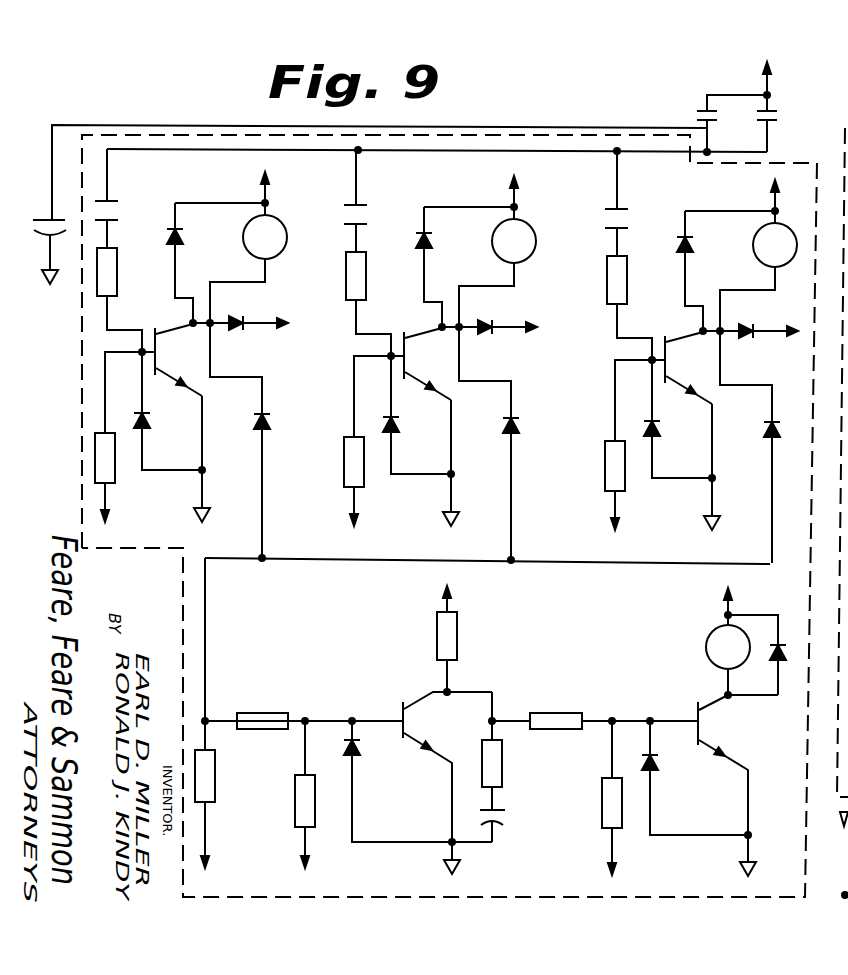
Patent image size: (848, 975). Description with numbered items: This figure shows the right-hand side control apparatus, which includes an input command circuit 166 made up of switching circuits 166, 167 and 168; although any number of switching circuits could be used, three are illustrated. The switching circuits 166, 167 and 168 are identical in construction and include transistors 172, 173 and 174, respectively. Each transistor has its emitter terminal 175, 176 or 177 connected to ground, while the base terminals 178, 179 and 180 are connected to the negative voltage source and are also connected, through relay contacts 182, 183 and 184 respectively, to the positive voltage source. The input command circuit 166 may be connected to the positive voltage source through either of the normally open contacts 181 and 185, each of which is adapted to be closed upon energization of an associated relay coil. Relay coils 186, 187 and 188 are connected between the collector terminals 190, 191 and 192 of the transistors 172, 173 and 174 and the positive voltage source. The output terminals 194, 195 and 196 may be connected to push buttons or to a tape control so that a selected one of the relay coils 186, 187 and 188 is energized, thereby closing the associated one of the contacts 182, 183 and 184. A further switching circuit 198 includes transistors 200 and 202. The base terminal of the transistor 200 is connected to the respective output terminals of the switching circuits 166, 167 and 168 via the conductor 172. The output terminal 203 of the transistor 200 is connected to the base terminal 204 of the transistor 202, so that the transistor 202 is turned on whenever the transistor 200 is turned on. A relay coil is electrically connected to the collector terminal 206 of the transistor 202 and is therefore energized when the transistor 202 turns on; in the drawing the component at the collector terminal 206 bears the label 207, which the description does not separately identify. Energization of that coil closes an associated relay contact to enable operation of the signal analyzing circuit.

The input command circuit 166 is at (176, 395).
The switching circuit 167 is at (423, 356).
The switching circuit 168 is at (679, 357).
The transistor 172 is at (172, 321).
The transistor 173 is at (411, 344).
The transistor 174 is at (671, 349).
The emitter terminal 175 is at (194, 393).
The emitter terminal 176 is at (417, 415).
The emitter terminal 177 is at (678, 419).
The base terminal 178 is at (142, 352).
The base terminal 179 is at (339, 370).
The base terminal 180 is at (604, 354).
The normally open contact 181 is at (697, 110).
The relay contact 182 is at (110, 200).
The relay contact 183 is at (379, 200).
The relay contact 184 is at (637, 203).
The normally open contact 185 is at (779, 110).
The relay coil 186 is at (244, 241).
The relay coil 187 is at (487, 240).
The relay coil 188 is at (752, 248).
The collector terminal 190 is at (196, 328).
The collector terminal 191 is at (481, 347).
The collector terminal 192 is at (744, 350).
The output terminal 194 is at (256, 320).
The output terminal 195 is at (520, 313).
The output terminal 196 is at (772, 316).
The switching circuit 198 is at (492, 733).
The transistor 200 is at (414, 700).
The transistor 202 is at (712, 700).
The output terminal 203 is at (508, 716).
The base terminal 204 is at (650, 719).
The collector terminal 206 is at (729, 698).
The indicator lamp 207 is at (707, 644).